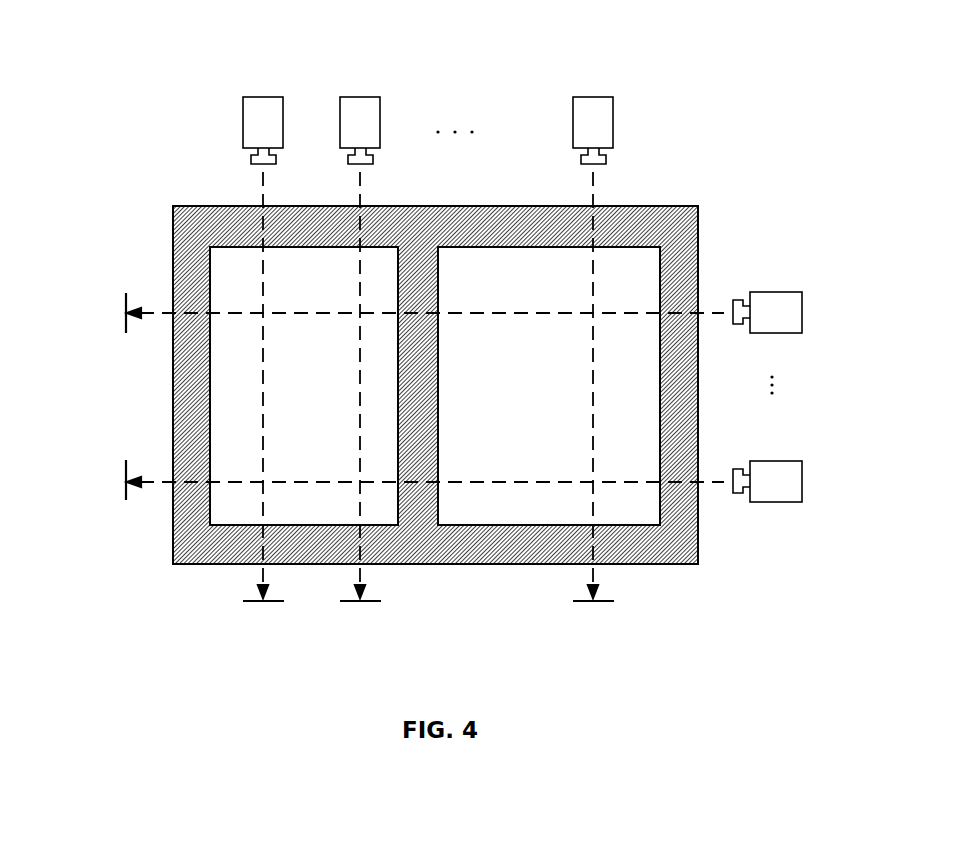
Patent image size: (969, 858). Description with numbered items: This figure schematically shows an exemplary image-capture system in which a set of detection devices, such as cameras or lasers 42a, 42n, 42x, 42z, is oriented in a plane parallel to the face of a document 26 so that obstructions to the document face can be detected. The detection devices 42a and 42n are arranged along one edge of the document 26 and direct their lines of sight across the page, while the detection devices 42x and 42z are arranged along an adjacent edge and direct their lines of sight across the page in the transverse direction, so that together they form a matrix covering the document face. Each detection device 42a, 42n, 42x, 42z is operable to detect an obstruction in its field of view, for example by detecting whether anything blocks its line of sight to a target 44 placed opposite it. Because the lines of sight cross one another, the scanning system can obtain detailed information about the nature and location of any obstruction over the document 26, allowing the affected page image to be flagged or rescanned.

The document 26 is at (697, 566).
The detection device 42a is at (265, 96).
The detection device 42n is at (595, 96).
The detection device 42x is at (803, 312).
The detection device 42z is at (803, 481).
The target 44 is at (124, 312).